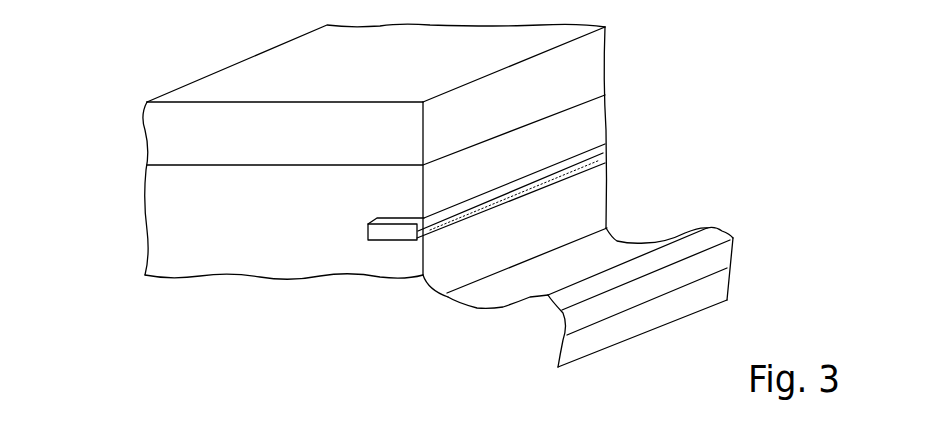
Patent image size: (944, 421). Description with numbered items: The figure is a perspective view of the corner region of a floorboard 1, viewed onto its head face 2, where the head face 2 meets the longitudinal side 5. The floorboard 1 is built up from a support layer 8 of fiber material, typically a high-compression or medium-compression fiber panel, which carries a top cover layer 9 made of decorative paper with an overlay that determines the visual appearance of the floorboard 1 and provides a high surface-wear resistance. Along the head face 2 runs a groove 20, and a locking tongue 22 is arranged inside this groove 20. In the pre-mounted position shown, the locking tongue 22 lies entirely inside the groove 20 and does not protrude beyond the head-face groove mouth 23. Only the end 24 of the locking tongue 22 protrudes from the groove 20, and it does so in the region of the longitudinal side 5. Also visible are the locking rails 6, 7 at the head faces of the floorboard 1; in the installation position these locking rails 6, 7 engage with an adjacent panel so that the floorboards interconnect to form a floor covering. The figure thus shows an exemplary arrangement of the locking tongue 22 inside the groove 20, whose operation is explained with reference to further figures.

The floorboard 1 is at (651, 63).
The head face 2 is at (583, 64).
The longitudinal side 5 is at (178, 198).
The locking rail 6 is at (620, 243).
The locking rail 7 is at (688, 250).
The support layer 8 is at (209, 249).
The cover layer 9 is at (150, 128).
The groove 20 is at (519, 190).
The locking tongue 22 is at (603, 152).
The head-face groove mouth 23 is at (588, 171).
The end of the locking tongue 24 is at (375, 222).